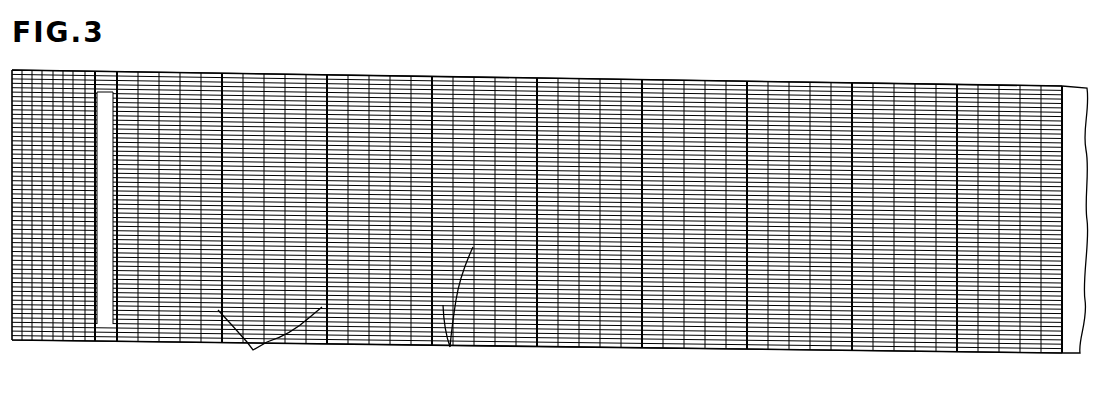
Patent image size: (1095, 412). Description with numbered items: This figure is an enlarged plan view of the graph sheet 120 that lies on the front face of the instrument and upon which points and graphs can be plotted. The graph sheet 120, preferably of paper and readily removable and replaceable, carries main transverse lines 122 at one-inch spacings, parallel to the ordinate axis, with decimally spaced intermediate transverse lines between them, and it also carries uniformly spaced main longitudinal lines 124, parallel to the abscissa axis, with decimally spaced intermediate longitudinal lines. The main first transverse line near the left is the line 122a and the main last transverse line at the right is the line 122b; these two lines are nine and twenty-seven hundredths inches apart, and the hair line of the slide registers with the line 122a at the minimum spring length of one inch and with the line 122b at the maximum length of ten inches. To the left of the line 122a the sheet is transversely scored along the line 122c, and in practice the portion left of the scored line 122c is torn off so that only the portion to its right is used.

The graph sheet 120 is at (556, 78).
The main transverse lines 122 is at (253, 350).
The first transverse line 122a is at (112, 322).
The last transverse line 122b is at (1060, 340).
The scored line 122c is at (88, 327).
The main longitudinal lines 124 is at (450, 347).